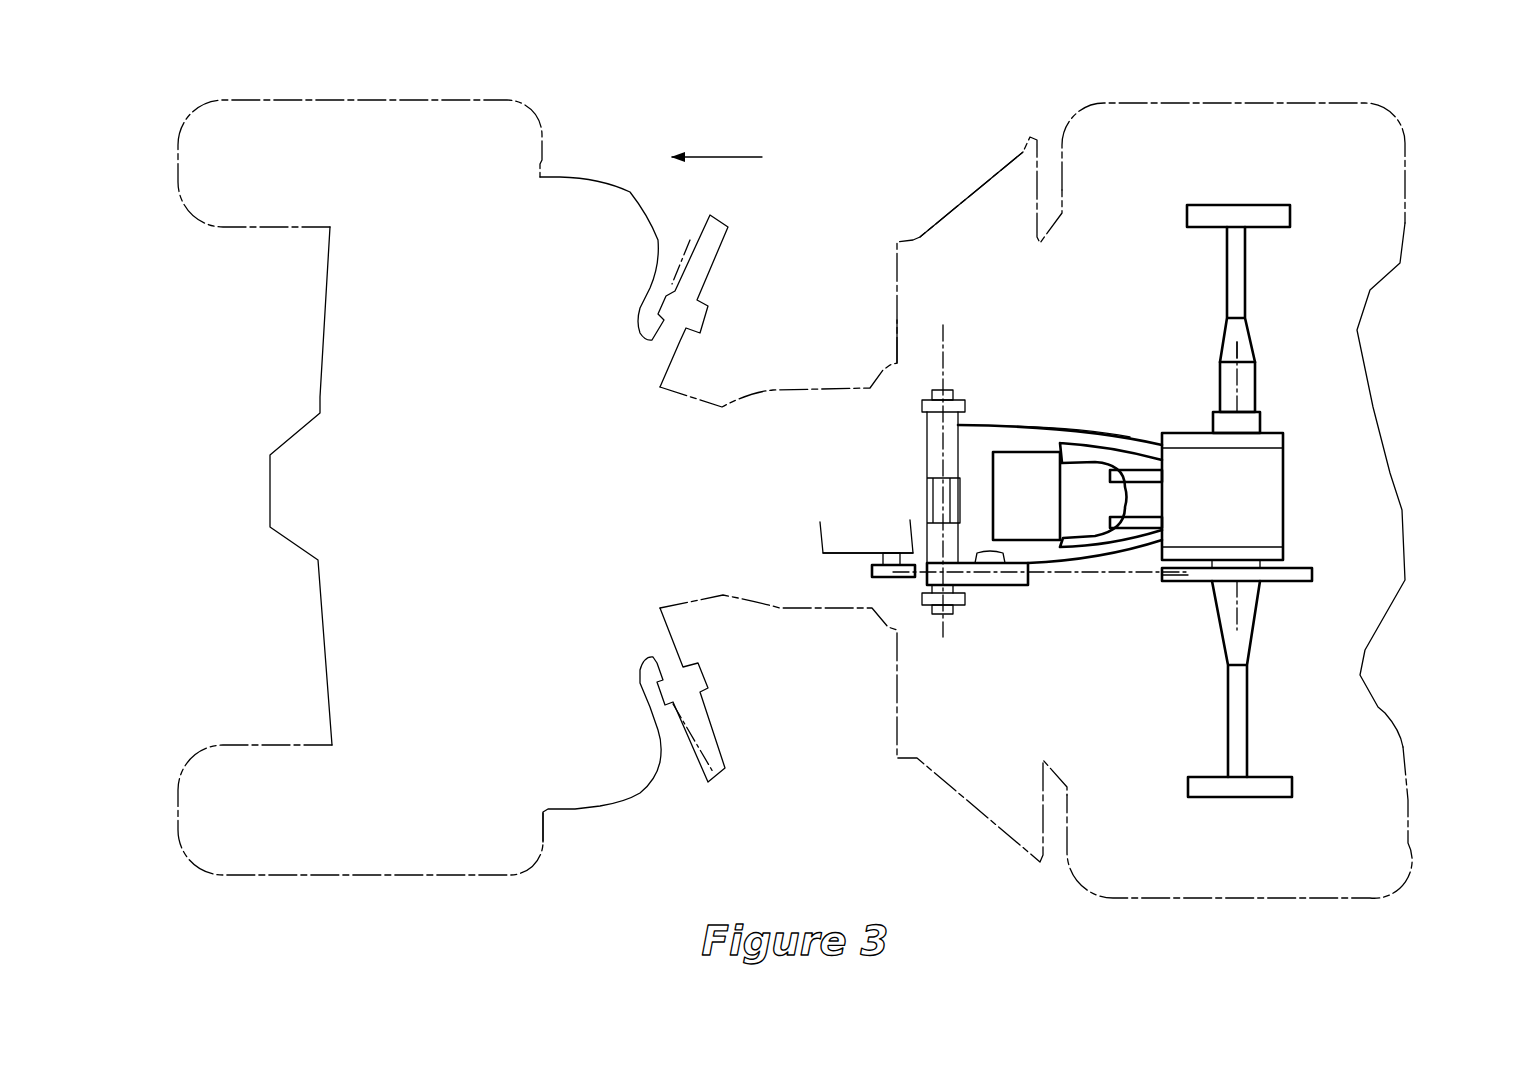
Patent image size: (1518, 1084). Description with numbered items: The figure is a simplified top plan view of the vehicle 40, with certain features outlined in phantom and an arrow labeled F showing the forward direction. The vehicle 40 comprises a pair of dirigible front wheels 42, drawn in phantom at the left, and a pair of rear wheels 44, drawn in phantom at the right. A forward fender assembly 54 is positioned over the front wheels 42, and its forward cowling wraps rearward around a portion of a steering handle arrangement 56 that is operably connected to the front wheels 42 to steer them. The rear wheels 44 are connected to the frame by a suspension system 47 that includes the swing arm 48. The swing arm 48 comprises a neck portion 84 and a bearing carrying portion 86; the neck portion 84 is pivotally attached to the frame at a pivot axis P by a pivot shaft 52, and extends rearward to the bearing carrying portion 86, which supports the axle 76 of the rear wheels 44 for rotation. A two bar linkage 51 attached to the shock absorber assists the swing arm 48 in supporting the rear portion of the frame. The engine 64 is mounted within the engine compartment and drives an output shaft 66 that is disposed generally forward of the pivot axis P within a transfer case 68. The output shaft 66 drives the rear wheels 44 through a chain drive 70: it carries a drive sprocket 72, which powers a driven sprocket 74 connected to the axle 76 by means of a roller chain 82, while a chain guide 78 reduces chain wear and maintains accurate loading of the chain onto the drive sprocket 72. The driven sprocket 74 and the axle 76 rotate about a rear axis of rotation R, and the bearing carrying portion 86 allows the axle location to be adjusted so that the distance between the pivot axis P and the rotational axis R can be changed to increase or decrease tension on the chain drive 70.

The vehicle 40 is at (1367, 357).
The front wheels 42 is at (222, 233).
The rear wheels 44 is at (1405, 185).
The suspension system 47 is at (1010, 330).
The swing arm 48 is at (1086, 410).
The two bar linkage 51 is at (1135, 463).
The pivot shaft 52 is at (922, 431).
The forward fender assembly 54 is at (317, 397).
The steering handle arrangement 56 is at (700, 768).
The engine 64 is at (832, 560).
The output shaft 66 is at (892, 553).
The transfer case 68 is at (880, 563).
The chain drive 70 is at (1146, 583).
The drive sprocket 72 is at (870, 580).
The driven sprocket 74 is at (1312, 580).
The axle 76 is at (1225, 287).
The chain guide 78 is at (992, 587).
The roller chain 82 is at (1078, 590).
The neck portion 84 is at (1018, 440).
The bearing carrying portion 86 is at (1284, 491).
The forward direction arrow F is at (717, 157).
The pivot axis P is at (940, 340).
The rear axis of rotation R is at (1237, 393).